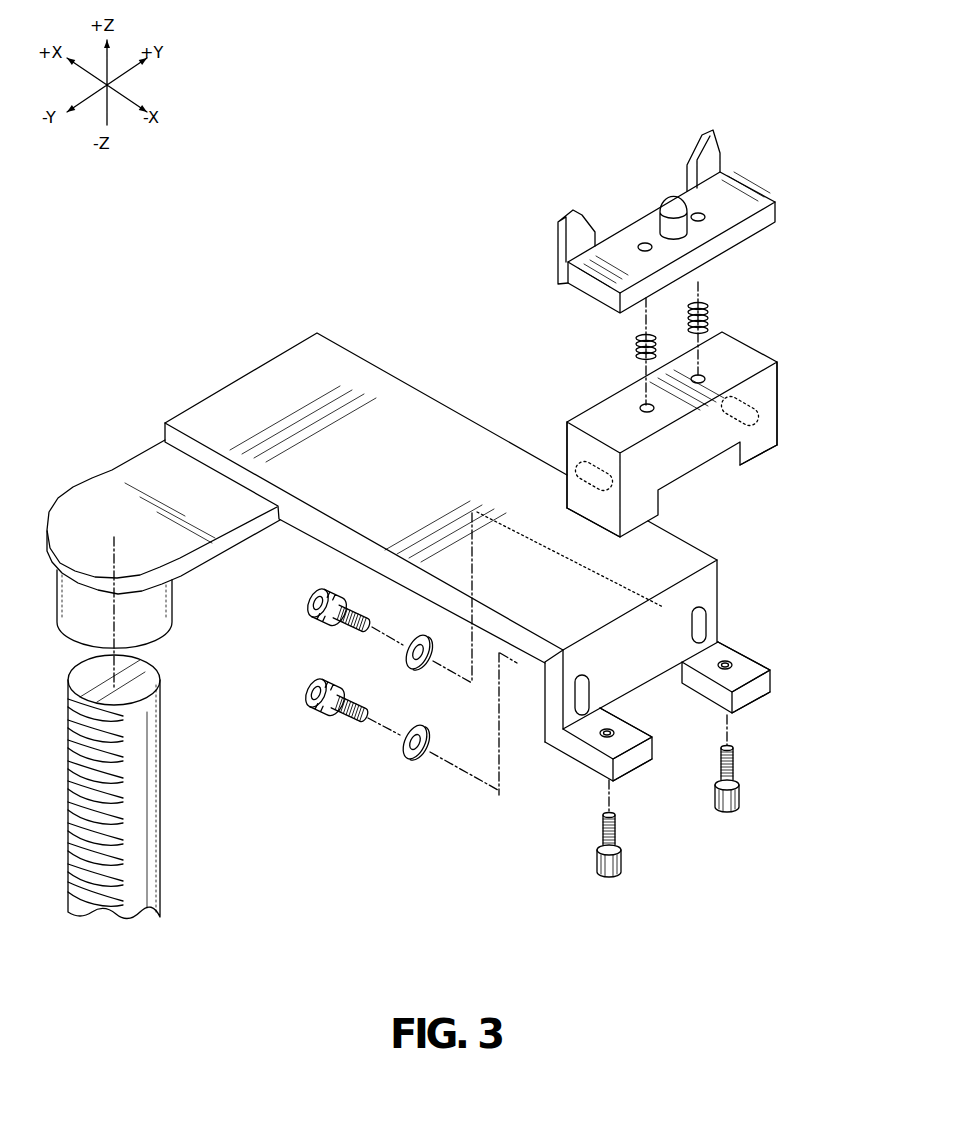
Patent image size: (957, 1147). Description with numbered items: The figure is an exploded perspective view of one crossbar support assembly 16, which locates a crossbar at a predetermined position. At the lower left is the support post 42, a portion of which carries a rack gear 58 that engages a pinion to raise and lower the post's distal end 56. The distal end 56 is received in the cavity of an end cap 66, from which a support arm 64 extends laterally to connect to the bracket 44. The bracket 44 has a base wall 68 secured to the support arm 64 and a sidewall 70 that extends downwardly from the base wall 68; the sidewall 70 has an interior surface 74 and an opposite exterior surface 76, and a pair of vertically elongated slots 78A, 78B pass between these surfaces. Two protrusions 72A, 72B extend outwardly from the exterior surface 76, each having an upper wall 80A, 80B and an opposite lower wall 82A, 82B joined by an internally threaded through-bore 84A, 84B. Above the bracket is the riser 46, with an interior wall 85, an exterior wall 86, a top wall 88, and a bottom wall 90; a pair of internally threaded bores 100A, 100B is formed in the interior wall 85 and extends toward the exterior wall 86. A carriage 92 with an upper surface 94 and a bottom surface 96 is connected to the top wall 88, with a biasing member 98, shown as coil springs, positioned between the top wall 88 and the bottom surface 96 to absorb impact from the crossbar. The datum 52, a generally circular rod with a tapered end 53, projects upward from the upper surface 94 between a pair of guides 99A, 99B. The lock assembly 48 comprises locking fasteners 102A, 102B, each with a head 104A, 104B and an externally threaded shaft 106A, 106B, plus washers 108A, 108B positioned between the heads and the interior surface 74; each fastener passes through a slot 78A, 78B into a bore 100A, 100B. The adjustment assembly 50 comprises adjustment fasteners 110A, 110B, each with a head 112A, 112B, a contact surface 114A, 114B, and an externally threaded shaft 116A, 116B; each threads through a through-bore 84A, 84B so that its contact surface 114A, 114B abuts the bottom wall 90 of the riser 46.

The crossbar support assembly 16 is at (195, 350).
The support post 42 is at (150, 850).
The bracket 44 is at (400, 363).
The riser 46 is at (785, 388).
The lock assembly 48 is at (490, 800).
The adjustment assembly 50 is at (737, 882).
The datum 52 is at (667, 188).
The tapered end 53 is at (665, 200).
The distal end 56 is at (82, 680).
The rack gear 58 is at (90, 903).
The support arm 64 is at (105, 492).
The end cap 66 is at (66, 594).
The base wall 68 is at (420, 405).
The sidewall 70 is at (706, 580).
The protrusion 72A is at (590, 780).
The protrusion 72B is at (770, 672).
The interior surface 74 is at (545, 723).
The exterior surface 76 is at (653, 672).
The elongated slot 78A is at (575, 697).
The elongated slot 78B is at (707, 625).
The upper wall 80A is at (633, 735).
The upper wall 80B is at (750, 667).
The lower wall 82A is at (632, 772).
The lower wall 82B is at (748, 705).
The internally threaded through-bore 84A is at (607, 728).
The internally threaded through-bore 84B is at (722, 664).
The interior wall 85 is at (566, 446).
The exterior wall 86 is at (760, 414).
The top wall 88 is at (738, 356).
The bottom wall 90 is at (748, 460).
The carriage 92 is at (772, 185).
The upper surface 94 is at (733, 188).
The bottom surface 96 is at (755, 238).
The biasing member 98 is at (690, 318).
The guide 99A is at (558, 224).
The guide 99B is at (700, 136).
The internally threaded bore 100A is at (600, 467).
The internally threaded bore 100B is at (732, 430).
The locking fastener 102A is at (362, 695).
The locking fastener 102B is at (362, 600).
The head 104A is at (310, 690).
The head 104B is at (312, 602).
The externally threaded shaft 106A is at (343, 717).
The externally threaded shaft 106B is at (343, 625).
The washer 108A is at (405, 760).
The washer 108B is at (408, 670).
The adjustment fastener 110A is at (585, 890).
The adjustment fastener 110B is at (782, 840).
The head 112A is at (610, 880).
The head 112B is at (730, 813).
The contact surface 114A is at (610, 813).
The contact surface 114B is at (730, 747).
The externally threaded shaft 116A is at (617, 837).
The externally threaded shaft 116B is at (735, 773).